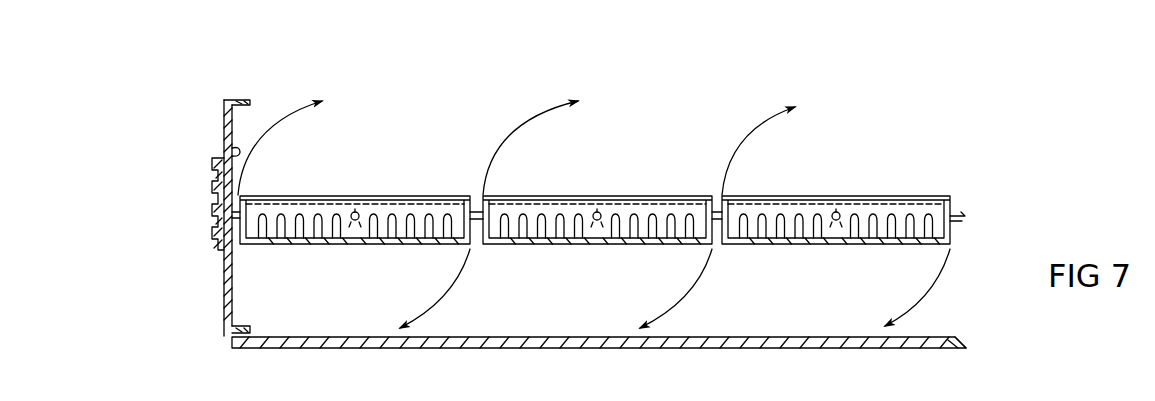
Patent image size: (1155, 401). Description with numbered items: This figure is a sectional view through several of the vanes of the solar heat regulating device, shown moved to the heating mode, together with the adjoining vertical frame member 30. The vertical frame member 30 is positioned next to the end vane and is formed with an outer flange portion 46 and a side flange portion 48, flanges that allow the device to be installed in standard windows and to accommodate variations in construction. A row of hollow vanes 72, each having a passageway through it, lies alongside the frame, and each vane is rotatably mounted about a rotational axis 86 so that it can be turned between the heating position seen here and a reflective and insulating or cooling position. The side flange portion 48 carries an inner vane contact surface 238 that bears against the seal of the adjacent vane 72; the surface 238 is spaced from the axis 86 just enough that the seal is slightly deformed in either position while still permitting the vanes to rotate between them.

The vertical frame member 30 is at (223, 337).
The outer flange portion 46 is at (246, 101).
The side flange portion 48 is at (228, 142).
The hollow vane 72 is at (383, 195).
The rotational axis 86 is at (839, 213).
The inner vane contact surface 238 is at (222, 163).